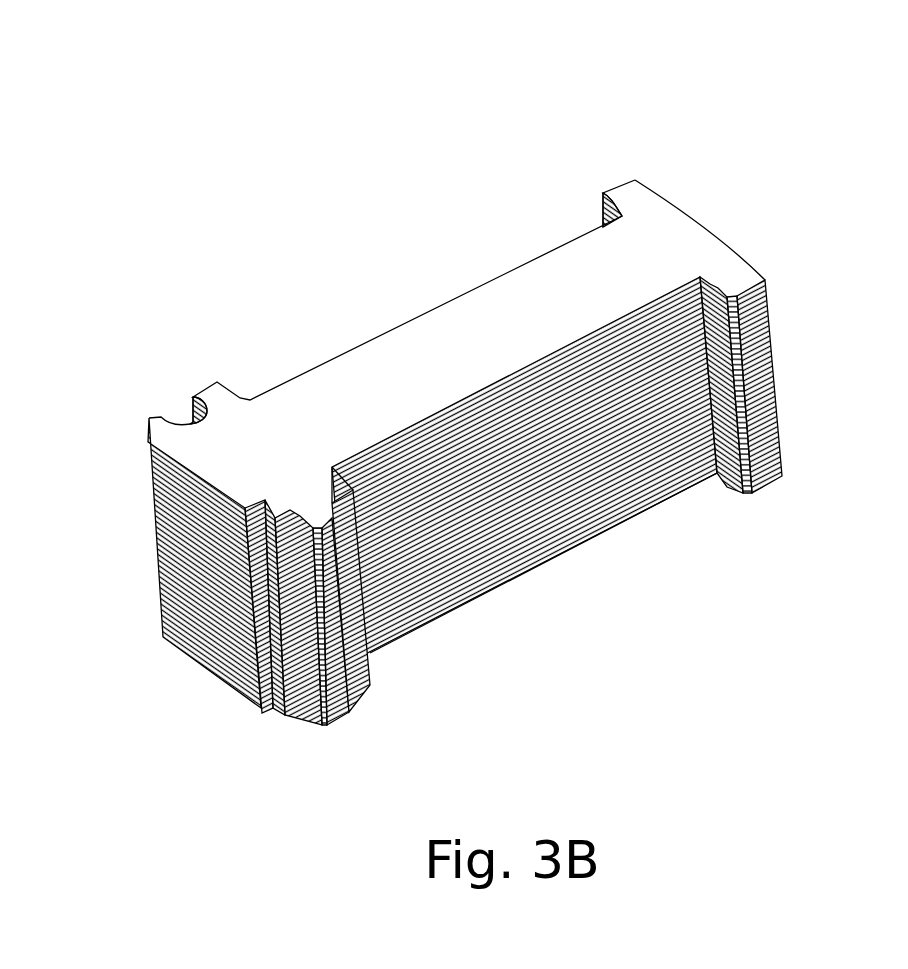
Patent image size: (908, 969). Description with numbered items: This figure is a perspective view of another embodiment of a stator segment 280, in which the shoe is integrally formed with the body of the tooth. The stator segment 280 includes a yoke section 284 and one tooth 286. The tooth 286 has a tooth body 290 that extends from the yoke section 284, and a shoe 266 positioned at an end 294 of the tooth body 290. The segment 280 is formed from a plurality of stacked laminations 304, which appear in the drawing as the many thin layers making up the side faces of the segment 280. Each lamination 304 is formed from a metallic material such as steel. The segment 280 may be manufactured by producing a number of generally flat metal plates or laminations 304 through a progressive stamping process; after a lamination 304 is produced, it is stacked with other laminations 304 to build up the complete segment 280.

The stator segment 280 is at (493, 376).
The shoe 266 is at (700, 236).
The end 294 is at (698, 276).
The tooth 286 is at (415, 325).
The yoke section 284 is at (208, 445).
The tooth body 290 is at (465, 367).
The lamination 304 is at (650, 508).